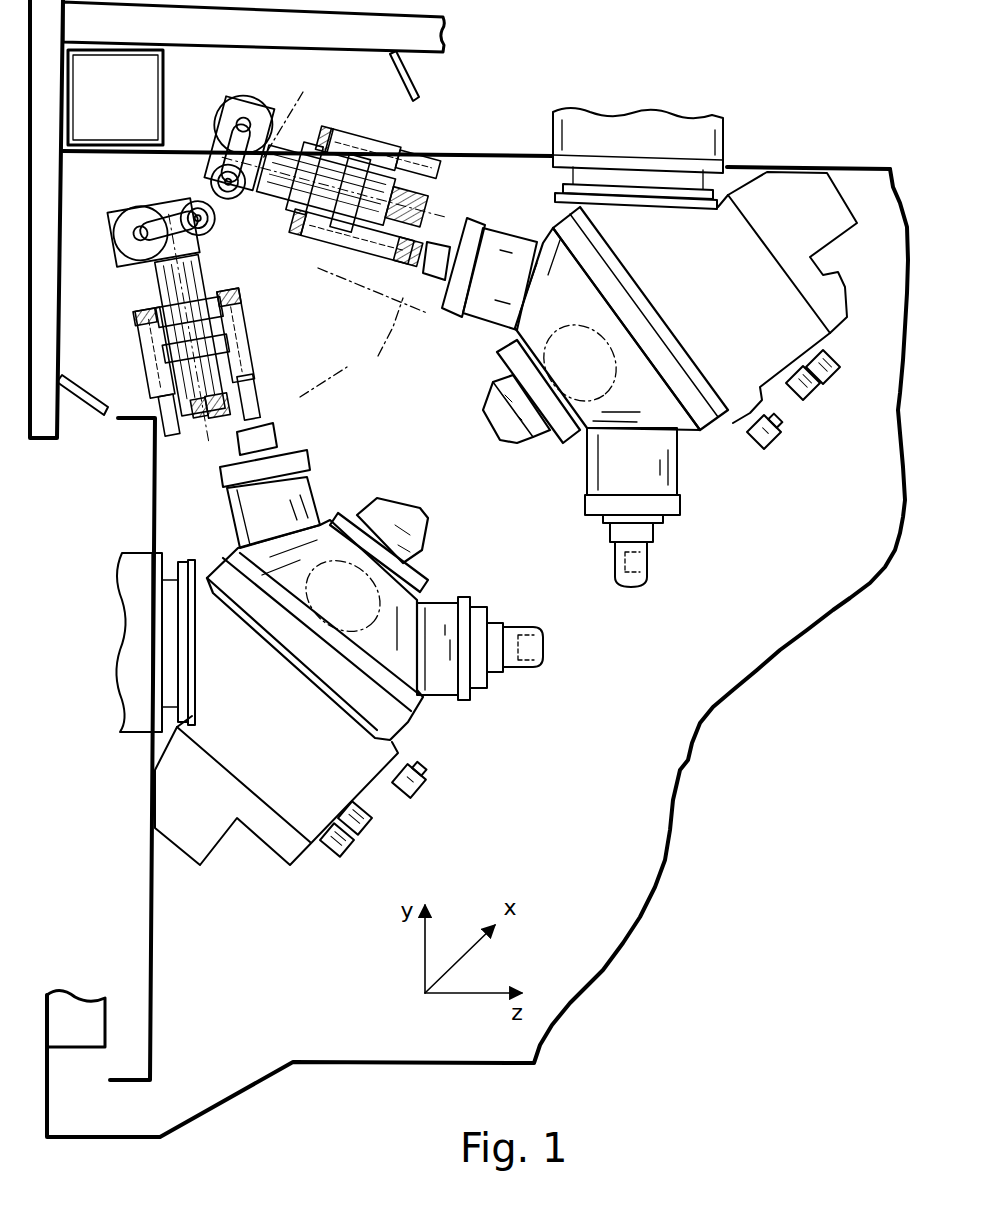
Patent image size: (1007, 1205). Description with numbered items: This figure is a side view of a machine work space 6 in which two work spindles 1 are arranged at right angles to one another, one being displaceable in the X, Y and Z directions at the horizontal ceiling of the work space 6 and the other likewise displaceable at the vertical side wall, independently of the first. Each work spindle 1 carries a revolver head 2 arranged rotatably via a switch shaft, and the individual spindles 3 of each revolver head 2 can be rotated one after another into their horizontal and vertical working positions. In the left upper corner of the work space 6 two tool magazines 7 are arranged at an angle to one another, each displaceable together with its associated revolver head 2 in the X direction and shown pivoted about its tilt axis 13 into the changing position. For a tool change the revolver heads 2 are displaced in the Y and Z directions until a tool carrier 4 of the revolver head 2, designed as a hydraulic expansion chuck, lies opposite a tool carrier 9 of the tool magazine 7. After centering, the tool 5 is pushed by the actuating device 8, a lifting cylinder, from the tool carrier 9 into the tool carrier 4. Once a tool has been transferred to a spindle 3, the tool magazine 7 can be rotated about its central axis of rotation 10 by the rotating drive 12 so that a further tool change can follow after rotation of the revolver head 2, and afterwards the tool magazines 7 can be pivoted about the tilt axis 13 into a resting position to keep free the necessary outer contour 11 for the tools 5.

The work spindle 1 is at (712, 142).
The revolver head 2 is at (813, 227).
The spindle 3 is at (667, 468).
The tool carrier 4 is at (640, 553).
The tool 5 is at (367, 135).
The work space 6 is at (570, 847).
The tool magazine 7 is at (397, 130).
The actuating device 8 is at (422, 216).
The tool carrier 9 is at (300, 228).
The central axis of rotation 10 is at (296, 111).
The outer contour 11 is at (363, 332).
The rotating drive 12 is at (232, 108).
The tilt axis 13 is at (213, 162).